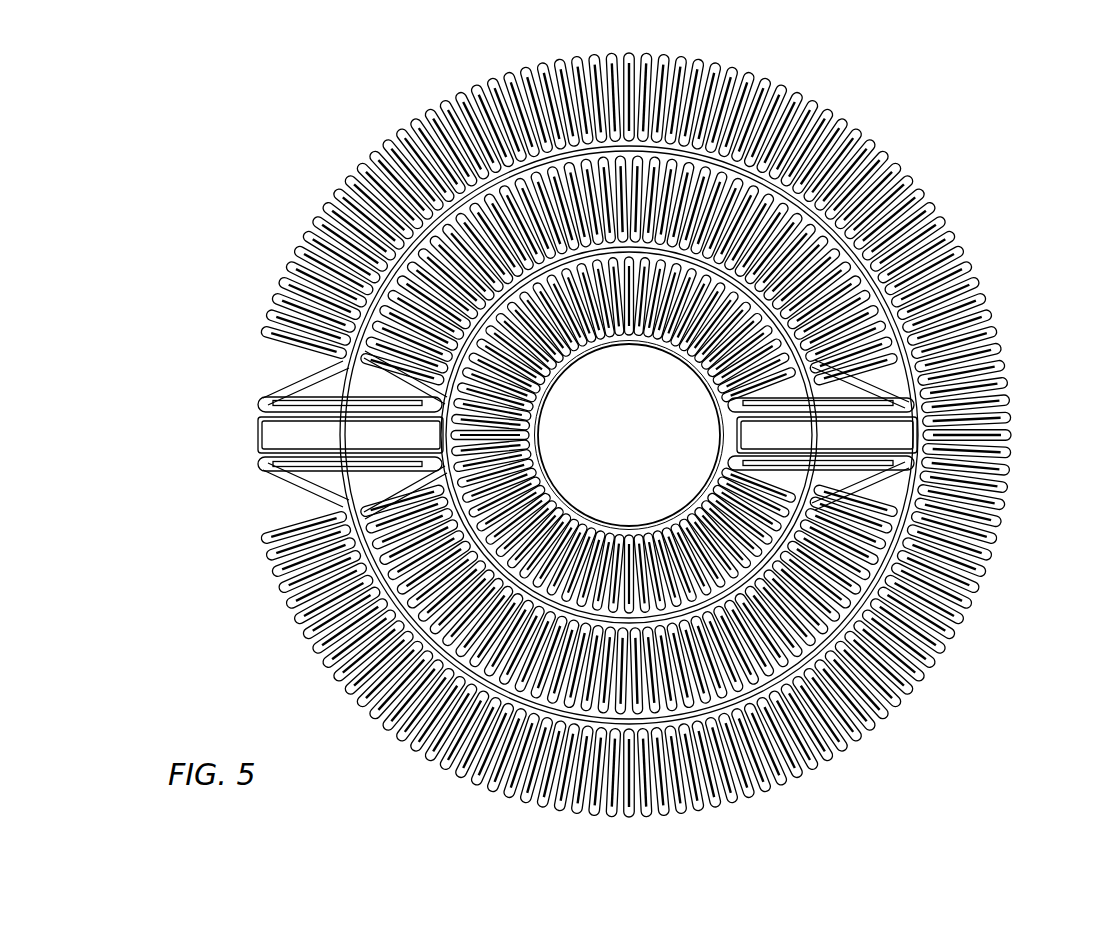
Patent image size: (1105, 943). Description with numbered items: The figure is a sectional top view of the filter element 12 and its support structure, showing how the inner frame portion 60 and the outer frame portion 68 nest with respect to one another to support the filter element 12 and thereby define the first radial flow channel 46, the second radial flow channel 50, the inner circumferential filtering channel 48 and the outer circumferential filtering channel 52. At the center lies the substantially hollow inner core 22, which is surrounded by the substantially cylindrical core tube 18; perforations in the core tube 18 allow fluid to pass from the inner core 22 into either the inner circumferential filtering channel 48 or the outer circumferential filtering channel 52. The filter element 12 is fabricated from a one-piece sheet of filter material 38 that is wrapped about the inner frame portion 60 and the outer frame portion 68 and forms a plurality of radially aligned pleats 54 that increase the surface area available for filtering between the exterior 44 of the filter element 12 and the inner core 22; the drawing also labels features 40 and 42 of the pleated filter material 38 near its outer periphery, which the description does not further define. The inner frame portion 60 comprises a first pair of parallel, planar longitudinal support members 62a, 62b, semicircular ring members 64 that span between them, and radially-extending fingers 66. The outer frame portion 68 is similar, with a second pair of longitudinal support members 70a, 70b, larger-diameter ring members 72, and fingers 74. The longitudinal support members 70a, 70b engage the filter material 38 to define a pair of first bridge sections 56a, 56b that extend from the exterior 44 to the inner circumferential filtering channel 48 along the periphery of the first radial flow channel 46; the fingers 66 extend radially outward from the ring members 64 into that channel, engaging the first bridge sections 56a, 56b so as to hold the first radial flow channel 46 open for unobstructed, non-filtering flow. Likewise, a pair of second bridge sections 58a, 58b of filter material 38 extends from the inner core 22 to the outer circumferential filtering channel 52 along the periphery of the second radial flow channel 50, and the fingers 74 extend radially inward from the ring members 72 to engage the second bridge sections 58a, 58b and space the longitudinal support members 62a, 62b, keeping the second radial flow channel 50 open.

The filter element 12 is at (200, 163).
The core tube 18 is at (580, 366).
The inner core 22 is at (593, 447).
The filter material 38 is at (752, 103).
The outer ring rib 40 is at (406, 176).
The outer ring slot 42 is at (400, 139).
The exterior 44 is at (870, 745).
The first radial flow channel 46 is at (244, 409).
The inner circumferential filtering channel 48 is at (747, 575).
The second radial flow channel 50 is at (732, 439).
The outer circumferential filtering channel 52 is at (417, 620).
The pleats 54 is at (485, 102).
The first bridge section 56a is at (293, 400).
The first bridge section 56b is at (270, 463).
The second bridge section 58a is at (897, 458).
The second bridge section 58b is at (897, 408).
The inner frame portion 60 is at (738, 266).
The longitudinal support member 62a is at (865, 470).
The longitudinal support member 62b is at (856, 399).
The ring member 64 is at (883, 572).
The radially-extending finger 66 is at (270, 435).
The outer frame portion 68 is at (914, 347).
The longitudinal support member 70a is at (318, 397).
The longitudinal support member 70b is at (305, 469).
The ring member 72 is at (383, 572).
The radially-extending finger 74 is at (747, 433).